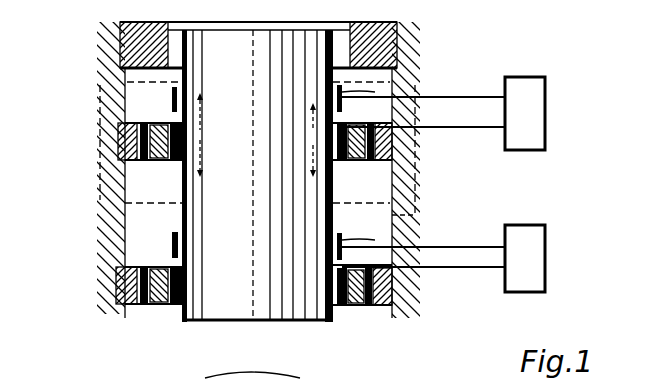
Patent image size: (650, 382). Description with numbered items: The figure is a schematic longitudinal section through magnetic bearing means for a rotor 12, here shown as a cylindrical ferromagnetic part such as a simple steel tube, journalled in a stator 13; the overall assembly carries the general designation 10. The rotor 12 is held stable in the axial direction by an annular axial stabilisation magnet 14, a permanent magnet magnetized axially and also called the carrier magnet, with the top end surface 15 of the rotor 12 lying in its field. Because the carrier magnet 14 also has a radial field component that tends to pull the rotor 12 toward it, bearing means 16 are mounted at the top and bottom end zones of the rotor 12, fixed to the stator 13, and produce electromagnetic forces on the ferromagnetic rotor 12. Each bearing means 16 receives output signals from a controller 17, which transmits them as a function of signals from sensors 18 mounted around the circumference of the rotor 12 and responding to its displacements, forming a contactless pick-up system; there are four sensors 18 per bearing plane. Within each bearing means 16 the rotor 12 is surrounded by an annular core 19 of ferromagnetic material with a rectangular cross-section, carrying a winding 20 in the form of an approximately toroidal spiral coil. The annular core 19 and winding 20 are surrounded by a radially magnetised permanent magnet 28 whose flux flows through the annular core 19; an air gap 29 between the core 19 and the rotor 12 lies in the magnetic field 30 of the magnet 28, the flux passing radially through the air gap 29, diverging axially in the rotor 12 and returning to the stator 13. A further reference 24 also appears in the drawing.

The rotor assembly 10 is at (177, 372).
The rotor 12 is at (225, 300).
The stator 13 is at (100, 223).
The axial stabilisation magnet 14 is at (125, 42).
The top end surface 15 is at (235, 22).
The bearing means 16 is at (108, 152).
The controller 17 is at (535, 108).
The sensors 18 is at (385, 92).
The annular core 19 is at (148, 306).
The winding 20 is at (160, 306).
The blade 24 is at (282, 376).
The permanent magnet 28 is at (118, 130).
The air gap 29 is at (130, 58).
The magnetic field 30 is at (100, 112).